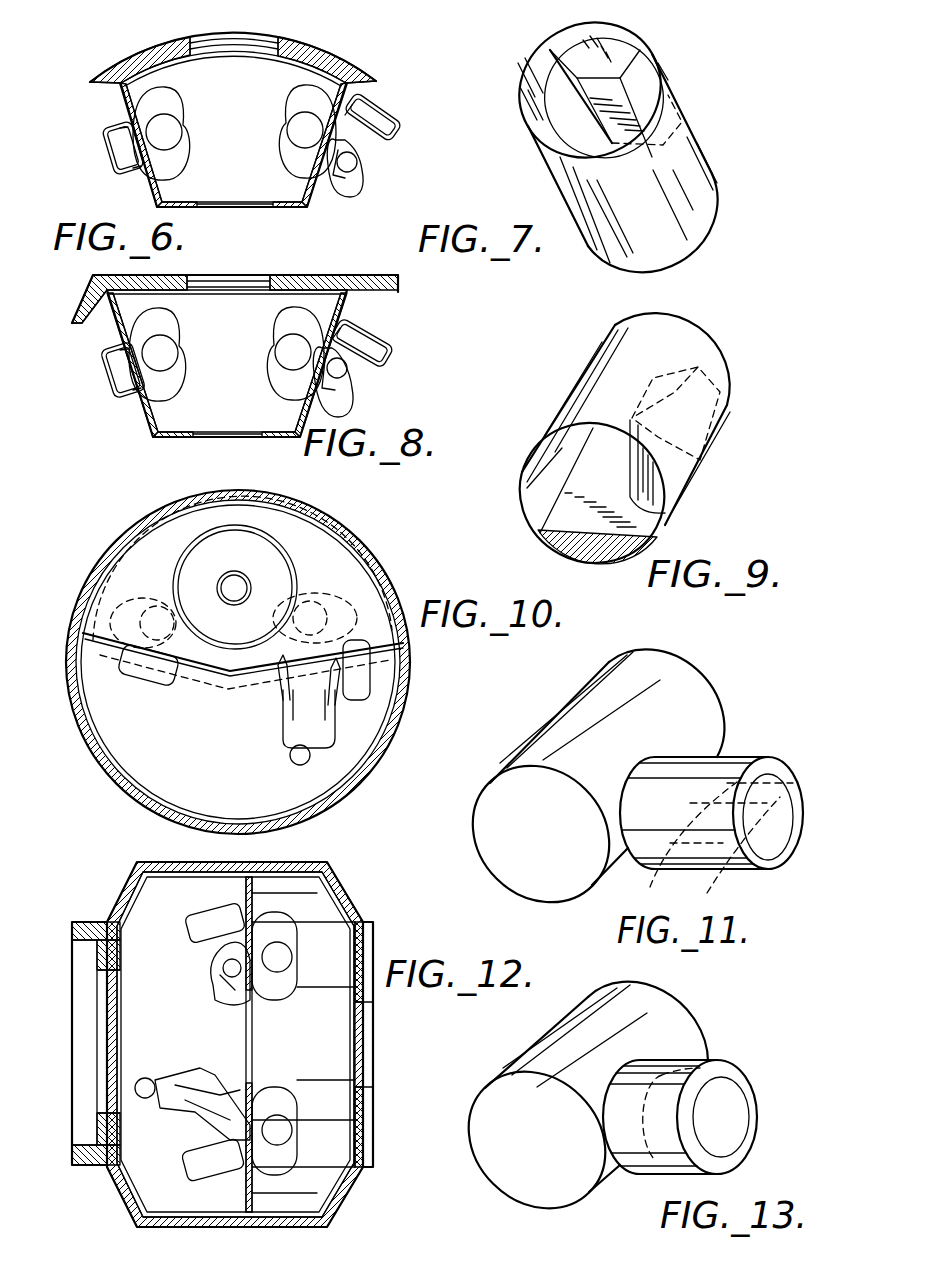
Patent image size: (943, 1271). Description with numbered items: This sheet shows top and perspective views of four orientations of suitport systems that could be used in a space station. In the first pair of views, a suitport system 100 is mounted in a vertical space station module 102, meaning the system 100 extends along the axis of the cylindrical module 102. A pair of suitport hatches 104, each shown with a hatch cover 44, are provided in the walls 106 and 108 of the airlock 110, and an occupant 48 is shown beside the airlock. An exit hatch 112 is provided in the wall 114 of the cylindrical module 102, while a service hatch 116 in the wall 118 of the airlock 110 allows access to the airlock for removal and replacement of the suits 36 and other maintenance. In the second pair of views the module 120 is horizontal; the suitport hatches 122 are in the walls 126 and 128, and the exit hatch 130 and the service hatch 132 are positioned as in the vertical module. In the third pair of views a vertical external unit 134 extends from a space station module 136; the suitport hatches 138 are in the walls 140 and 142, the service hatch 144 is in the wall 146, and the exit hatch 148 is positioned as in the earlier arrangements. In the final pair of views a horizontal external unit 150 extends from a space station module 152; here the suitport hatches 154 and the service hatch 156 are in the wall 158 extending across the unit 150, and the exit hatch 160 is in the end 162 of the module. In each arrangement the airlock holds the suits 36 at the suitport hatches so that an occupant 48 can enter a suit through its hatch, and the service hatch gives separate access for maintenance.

In FIG. 6, the suit 36 is at (162, 100).
In FIG. 8, the suit 36 is at (160, 325).
In FIG. 6, the hatch cover 44 is at (108, 127).
In FIG. 8, the hatch cover 44 is at (106, 348).
In FIG. 6, the occupant 48 is at (360, 182).
In FIG. 8, the occupant 48 is at (340, 405).
In FIG. 10, the occupant 48 is at (283, 748).
In FIG. 12, the occupant 48 is at (213, 992).
In FIG. 6, the suitport system 100 is at (131, 186).
In FIG. 7, the suitport system 100 is at (559, 66).
In FIG. 7, the space station module 102 is at (580, 244).
In FIG. 6, the suitport hatch 104 is at (130, 143).
In FIG. 6, the wall 106 is at (123, 95).
In FIG. 7, the wall 106 is at (580, 108).
In FIG. 7, the wall 108 is at (647, 77).
In FIG. 6, the airlock 110 is at (249, 131).
In FIG. 6, the exit hatch 112 is at (238, 37).
In FIG. 6, the wall 114 is at (327, 50).
In FIG. 7, the wall 114 is at (702, 160).
In FIG. 6, the service hatch 116 is at (221, 200).
In FIG. 6, the wall 118 is at (293, 208).
In FIG. 7, the wall 118 is at (630, 118).
In FIG. 9, the module 120 is at (686, 314).
In FIG. 8, the suitport hatch 122 is at (133, 368).
In FIG. 8, the wall 126 is at (148, 412).
In FIG. 9, the wall 126 is at (707, 390).
In FIG. 9, the wall 128 is at (663, 515).
In FIG. 8, the exit hatch 130 is at (240, 285).
In FIG. 8, the service hatch 132 is at (203, 430).
In FIG. 11, the external unit 134 is at (703, 763).
In FIG. 11, the space station module 136 is at (683, 663).
In FIG. 10, the suitport hatch 138 is at (147, 668).
In FIG. 10, the wall 140 is at (217, 672).
In FIG. 11, the wall 140 is at (778, 797).
In FIG. 10, the wall 142 is at (268, 668).
In FIG. 11, the wall 142 is at (652, 880).
In FIG. 10, the service hatch 144 is at (212, 540).
In FIG. 10, the wall 146 is at (337, 560).
In FIG. 11, the wall 146 is at (708, 885).
In FIG. 10, the exit hatch 148 is at (317, 514).
In FIG. 12, the external unit 150 is at (112, 897).
In FIG. 13, the external unit 150 is at (668, 1180).
In FIG. 13, the space station module 152 is at (655, 1008).
In FIG. 12, the suitport hatch 154 is at (217, 960).
In FIG. 12, the service hatch 156 is at (247, 1043).
In FIG. 12, the wall 158 is at (243, 896).
In FIG. 13, the wall 158 is at (700, 1063).
In FIG. 12, the exit hatch 160 is at (367, 1017).
In FIG. 13, the exit hatch 160 is at (740, 1112).
In FIG. 12, the end 162 is at (370, 1103).
In FIG. 13, the end 162 is at (733, 1075).